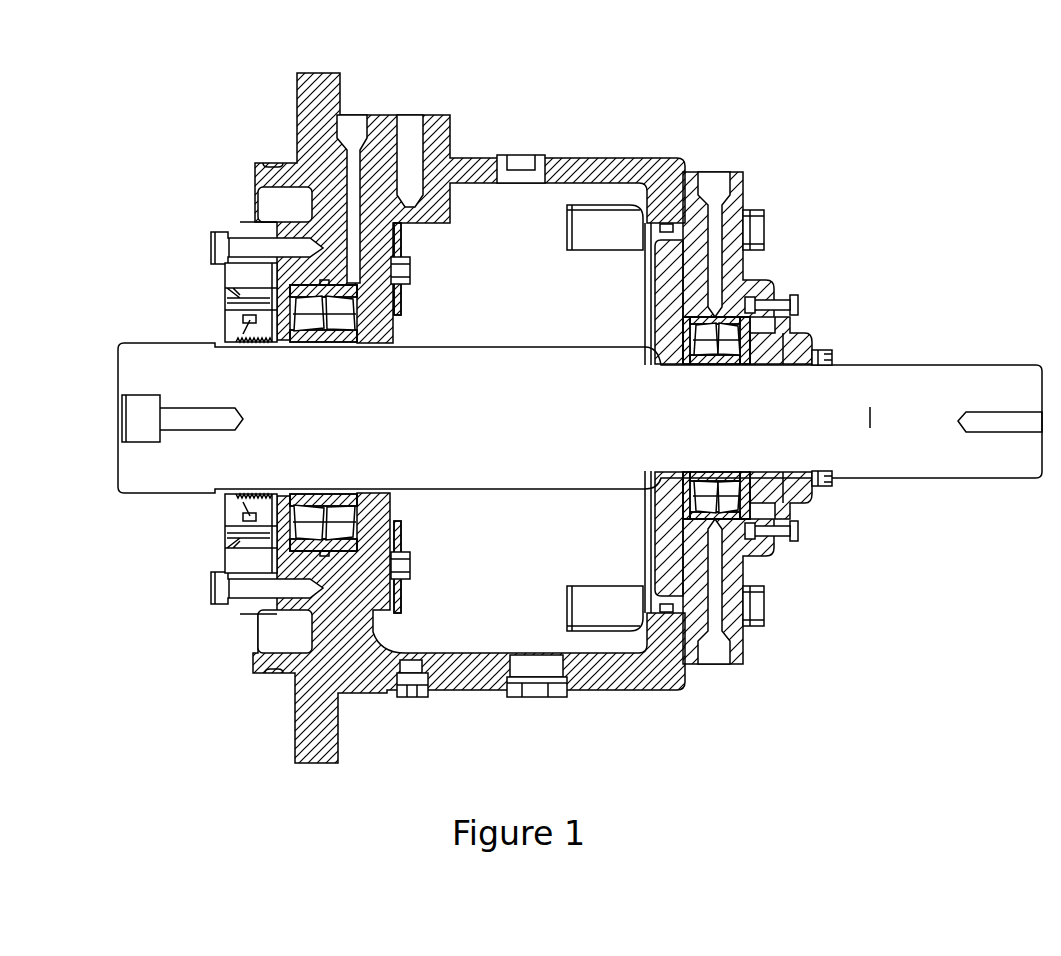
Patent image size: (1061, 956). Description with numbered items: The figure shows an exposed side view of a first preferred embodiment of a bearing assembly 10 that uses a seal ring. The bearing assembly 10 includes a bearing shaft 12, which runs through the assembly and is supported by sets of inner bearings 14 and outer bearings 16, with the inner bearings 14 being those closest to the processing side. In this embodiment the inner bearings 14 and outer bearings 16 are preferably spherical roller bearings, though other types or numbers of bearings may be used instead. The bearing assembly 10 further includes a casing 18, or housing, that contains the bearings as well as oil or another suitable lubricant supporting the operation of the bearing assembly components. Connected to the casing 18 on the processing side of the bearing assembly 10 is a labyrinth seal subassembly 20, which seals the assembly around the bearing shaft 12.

The bearing assembly 10 is at (464, 112).
The bearing shaft 12 is at (872, 410).
The inner bearings 14 is at (258, 592).
The outer bearings 16 is at (735, 515).
The casing 18 is at (654, 668).
The labyrinth seal subassembly 20 is at (266, 286).